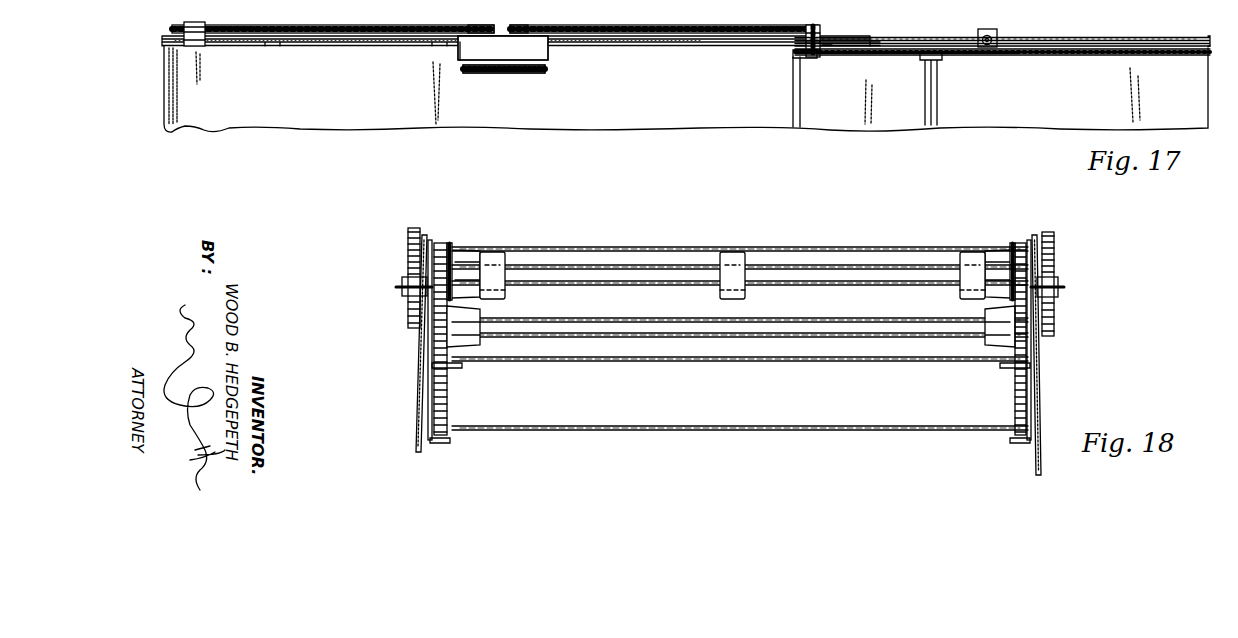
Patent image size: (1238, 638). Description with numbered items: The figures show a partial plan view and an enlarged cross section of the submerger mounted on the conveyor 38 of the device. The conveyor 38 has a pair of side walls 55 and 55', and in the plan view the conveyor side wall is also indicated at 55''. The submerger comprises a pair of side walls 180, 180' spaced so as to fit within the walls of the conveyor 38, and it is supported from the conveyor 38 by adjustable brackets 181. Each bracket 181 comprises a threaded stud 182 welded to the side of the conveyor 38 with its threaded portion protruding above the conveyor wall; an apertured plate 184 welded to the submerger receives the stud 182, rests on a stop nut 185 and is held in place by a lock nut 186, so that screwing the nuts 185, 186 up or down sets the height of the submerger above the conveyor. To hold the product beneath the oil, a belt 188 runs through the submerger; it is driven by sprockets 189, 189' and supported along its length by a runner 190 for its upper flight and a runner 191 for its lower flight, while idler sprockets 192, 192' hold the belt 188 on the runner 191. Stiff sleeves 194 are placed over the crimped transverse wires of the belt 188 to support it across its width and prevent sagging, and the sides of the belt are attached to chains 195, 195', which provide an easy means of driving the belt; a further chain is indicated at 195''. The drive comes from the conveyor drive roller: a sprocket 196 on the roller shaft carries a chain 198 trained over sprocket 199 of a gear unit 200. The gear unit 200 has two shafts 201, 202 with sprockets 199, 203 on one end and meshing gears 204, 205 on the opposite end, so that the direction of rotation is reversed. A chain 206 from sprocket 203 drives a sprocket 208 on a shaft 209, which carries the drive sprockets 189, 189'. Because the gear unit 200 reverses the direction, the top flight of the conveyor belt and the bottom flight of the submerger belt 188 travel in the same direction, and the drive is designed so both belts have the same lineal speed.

In FIG. 17, the conveyor 38 is at (903, 36).
In FIG. 18, the side wall 55 is at (402, 343).
In FIG. 18, the side wall 55' is at (1057, 355).
In FIG. 17, the side plate rail 55'' is at (521, 54).
In FIG. 18, the side wall 180 is at (403, 340).
In FIG. 18, the side wall 180' is at (1056, 340).
In FIG. 17, the adjustable bracket 181 is at (1000, 30).
In FIG. 18, the threaded stud 182 is at (1055, 242).
In FIG. 18, the apertured plate 184 is at (1064, 287).
In FIG. 18, the stop nut 185 is at (1058, 294).
In FIG. 18, the lock nut 186 is at (1058, 280).
In FIG. 17, the belt 188 is at (1005, 124).
In FIG. 18, the drive sprocket 189 is at (463, 257).
In FIG. 17, the drive sprocket 189' is at (1001, 62).
In FIG. 18, the drive sprocket 189' is at (995, 257).
In FIG. 18, the runner 190 is at (460, 370).
In FIG. 18, the runner 191 is at (440, 444).
In FIG. 18, the idler sprocket 192 is at (596, 299).
In FIG. 17, the idler sprocket 192' is at (867, 89).
In FIG. 18, the idler sprocket 192' is at (973, 299).
In FIG. 18, the stiff sleeve 194 is at (625, 366).
In FIG. 18, the chain 195 is at (461, 339).
In FIG. 18, the chain 195' is at (991, 339).
In FIG. 17, the rack 195'' is at (1002, 60).
In FIG. 17, the sprocket 196 is at (215, 20).
In FIG. 17, the chain 198 is at (272, 19).
In FIG. 17, the sprocket 199 is at (482, 21).
In FIG. 17, the gear unit 200 is at (452, 61).
In FIG. 17, the shaft 201 is at (497, 56).
In FIG. 17, the shaft 202 is at (538, 60).
In FIG. 17, the sprocket 203 is at (532, 21).
In FIG. 17, the gear 204 is at (492, 74).
In FIG. 17, the gear 205 is at (520, 74).
In FIG. 17, the chain 206 is at (640, 21).
In FIG. 17, the sprocket 208 is at (815, 22).
In FIG. 17, the shaft 209 is at (826, 40).